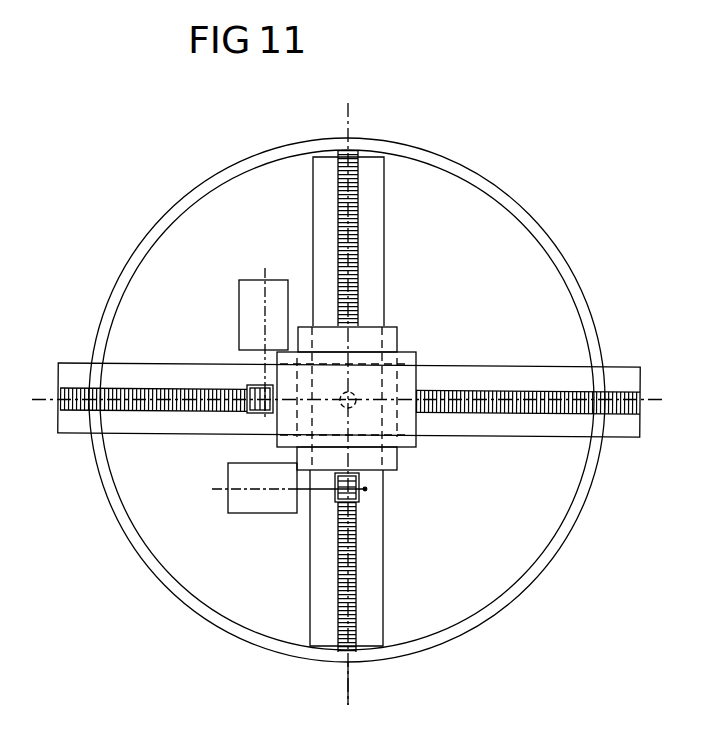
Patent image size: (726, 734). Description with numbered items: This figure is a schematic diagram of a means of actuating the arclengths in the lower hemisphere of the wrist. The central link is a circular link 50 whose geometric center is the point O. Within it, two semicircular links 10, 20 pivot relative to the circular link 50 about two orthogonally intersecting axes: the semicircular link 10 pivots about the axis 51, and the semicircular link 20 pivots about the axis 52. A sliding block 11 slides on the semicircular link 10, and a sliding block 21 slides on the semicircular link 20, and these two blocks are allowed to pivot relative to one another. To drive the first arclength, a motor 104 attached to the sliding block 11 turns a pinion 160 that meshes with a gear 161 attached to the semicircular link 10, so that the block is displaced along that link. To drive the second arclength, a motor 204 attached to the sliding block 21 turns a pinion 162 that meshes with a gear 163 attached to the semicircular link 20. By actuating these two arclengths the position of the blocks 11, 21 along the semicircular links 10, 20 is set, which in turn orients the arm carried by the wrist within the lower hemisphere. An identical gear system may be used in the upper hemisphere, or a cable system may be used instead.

The circular link 50 is at (533, 214).
The semicircular link 10 is at (349, 374).
The semicircular link 20 is at (371, 228).
The sliding block 21 is at (371, 338).
The sliding block 11 is at (408, 360).
The motor 104 is at (257, 298).
The gear 161 is at (197, 401).
The axis 51 is at (48, 399).
The pinion 160 is at (258, 410).
The motor 204 is at (277, 500).
The pinion 162 is at (357, 497).
The gear 163 is at (355, 550).
The axis 52 is at (349, 684).